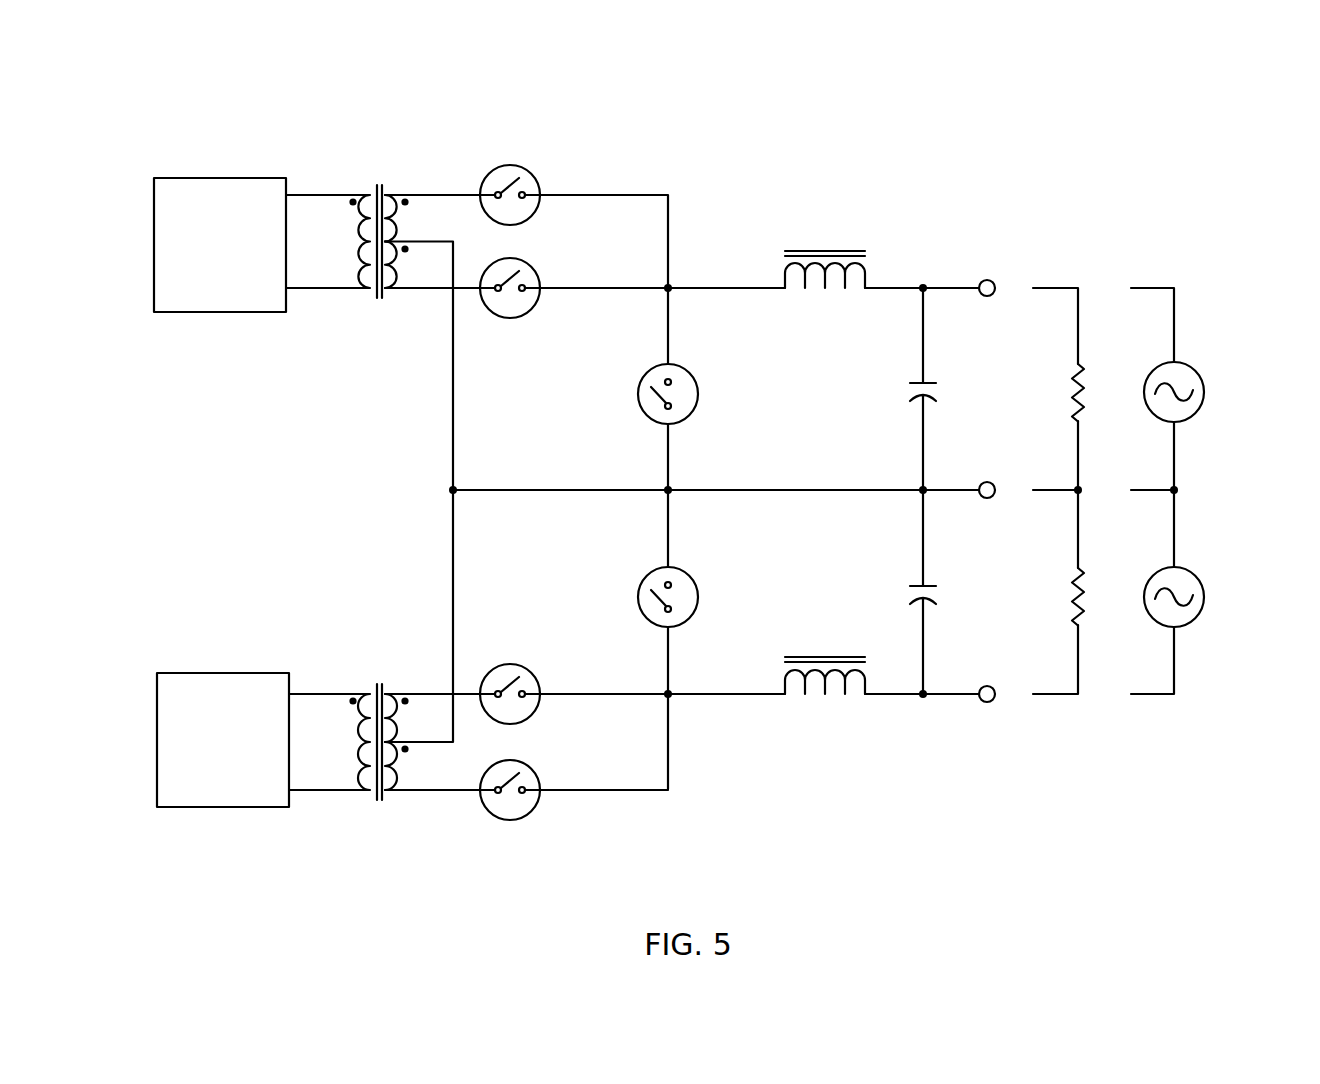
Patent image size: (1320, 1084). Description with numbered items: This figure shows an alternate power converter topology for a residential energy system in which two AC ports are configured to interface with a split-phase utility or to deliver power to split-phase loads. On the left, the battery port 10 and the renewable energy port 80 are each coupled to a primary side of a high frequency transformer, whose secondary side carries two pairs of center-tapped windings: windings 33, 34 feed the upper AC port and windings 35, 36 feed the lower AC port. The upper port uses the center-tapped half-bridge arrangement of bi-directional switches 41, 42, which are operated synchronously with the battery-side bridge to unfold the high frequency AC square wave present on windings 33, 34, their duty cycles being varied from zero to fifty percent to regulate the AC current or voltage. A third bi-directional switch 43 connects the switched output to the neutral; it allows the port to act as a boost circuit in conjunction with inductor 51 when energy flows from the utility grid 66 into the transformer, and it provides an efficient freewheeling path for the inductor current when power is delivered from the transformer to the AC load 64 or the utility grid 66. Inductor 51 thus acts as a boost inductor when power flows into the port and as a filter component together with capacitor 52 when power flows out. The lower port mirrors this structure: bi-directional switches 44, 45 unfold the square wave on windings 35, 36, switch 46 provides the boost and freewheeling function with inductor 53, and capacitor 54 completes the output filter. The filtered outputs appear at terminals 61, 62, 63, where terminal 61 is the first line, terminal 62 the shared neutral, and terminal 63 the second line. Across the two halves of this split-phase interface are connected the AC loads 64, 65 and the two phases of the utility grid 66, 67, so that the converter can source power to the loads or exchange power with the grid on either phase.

The battery port 10 is at (220, 208).
The renewable energy port 80 is at (223, 704).
The transformer winding 33 is at (417, 218).
The transformer winding 34 is at (417, 264).
The transformer winding 35 is at (417, 718).
The transformer winding 36 is at (417, 766).
The bi-directional switch 41 is at (510, 178).
The bi-directional switch 42 is at (510, 310).
The bi-directional switch 43 is at (692, 394).
The bi-directional switch 44 is at (510, 678).
The bi-directional switch 45 is at (510, 811).
The bi-directional switch 46 is at (692, 597).
The inductor 51 is at (825, 253).
The capacitor 52 is at (947, 394).
The inductor 53 is at (825, 657).
The capacitor 54 is at (947, 596).
The AC port terminal 61 is at (962, 270).
The AC port terminal 62 is at (967, 472).
The AC port terminal 63 is at (968, 691).
The AC load 64 is at (1098, 393).
The AC load 65 is at (1098, 597).
The utility grid 66 is at (1197, 392).
The utility grid 67 is at (1197, 597).